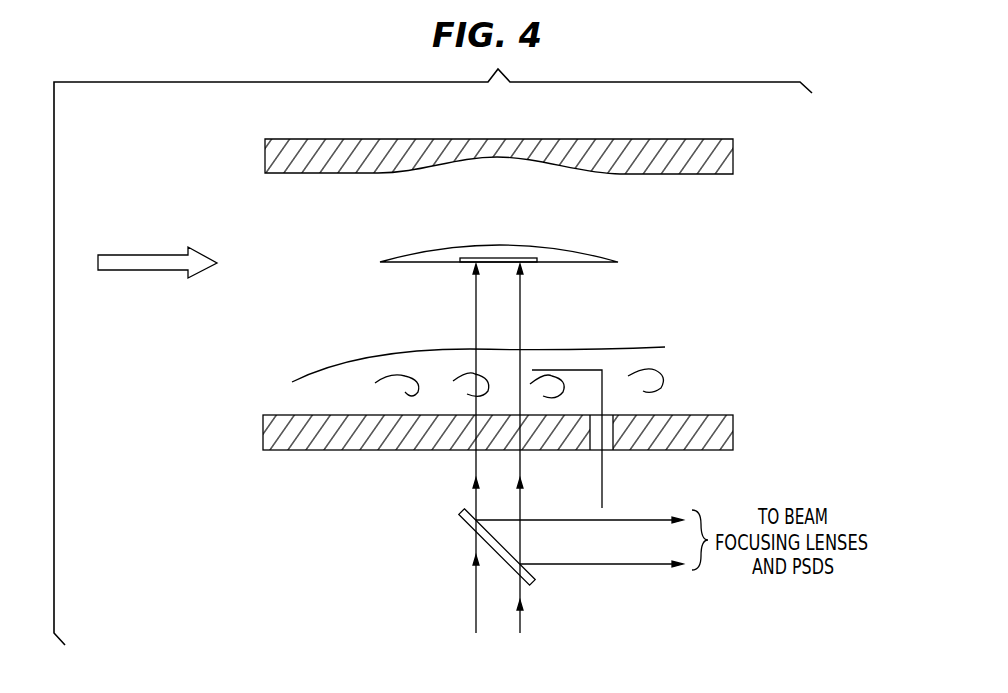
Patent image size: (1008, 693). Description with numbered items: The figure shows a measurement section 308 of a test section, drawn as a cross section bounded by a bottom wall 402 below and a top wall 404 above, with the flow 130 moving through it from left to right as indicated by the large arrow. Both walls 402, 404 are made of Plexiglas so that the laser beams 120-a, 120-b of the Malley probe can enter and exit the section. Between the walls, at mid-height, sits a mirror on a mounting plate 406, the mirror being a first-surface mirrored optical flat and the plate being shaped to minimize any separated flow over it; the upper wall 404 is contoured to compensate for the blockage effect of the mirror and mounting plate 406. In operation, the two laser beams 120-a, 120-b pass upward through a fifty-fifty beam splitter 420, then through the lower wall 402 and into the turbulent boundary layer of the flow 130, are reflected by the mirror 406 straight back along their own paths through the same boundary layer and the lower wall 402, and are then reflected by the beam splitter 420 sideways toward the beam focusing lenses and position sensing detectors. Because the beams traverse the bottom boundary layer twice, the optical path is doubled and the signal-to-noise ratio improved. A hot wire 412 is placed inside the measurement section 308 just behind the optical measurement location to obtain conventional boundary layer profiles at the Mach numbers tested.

The measurement section 308 is at (216, 133).
The flow 130 is at (128, 254).
The top wall 404 is at (735, 155).
The mirror on mounting plate 406 is at (441, 252).
The bottom wall 402 is at (735, 426).
The hot wire 412 is at (602, 484).
The 50/50 beam splitter 420 is at (462, 519).
The laser beam 120-a is at (476, 611).
The laser beam 120-b is at (520, 617).